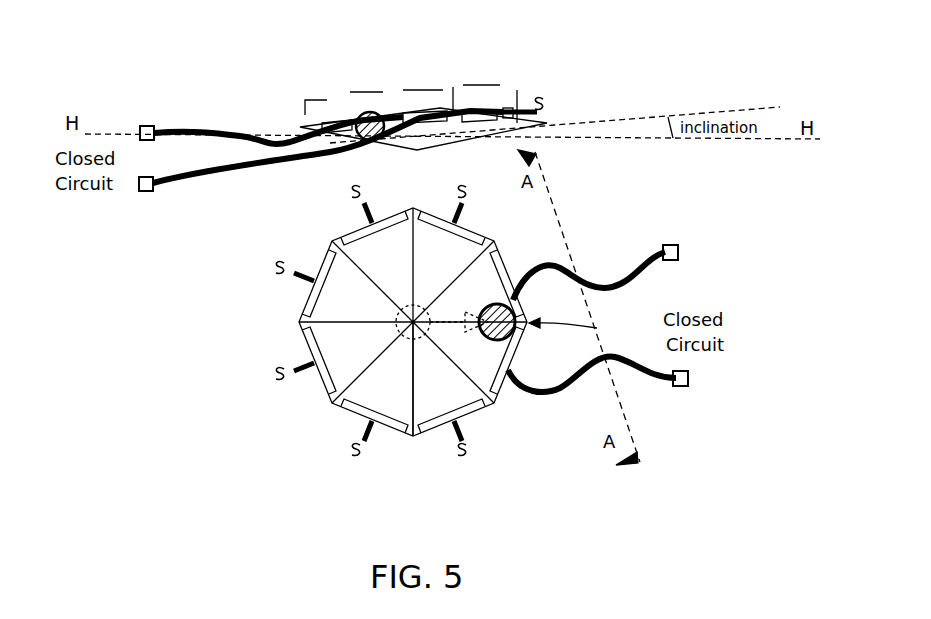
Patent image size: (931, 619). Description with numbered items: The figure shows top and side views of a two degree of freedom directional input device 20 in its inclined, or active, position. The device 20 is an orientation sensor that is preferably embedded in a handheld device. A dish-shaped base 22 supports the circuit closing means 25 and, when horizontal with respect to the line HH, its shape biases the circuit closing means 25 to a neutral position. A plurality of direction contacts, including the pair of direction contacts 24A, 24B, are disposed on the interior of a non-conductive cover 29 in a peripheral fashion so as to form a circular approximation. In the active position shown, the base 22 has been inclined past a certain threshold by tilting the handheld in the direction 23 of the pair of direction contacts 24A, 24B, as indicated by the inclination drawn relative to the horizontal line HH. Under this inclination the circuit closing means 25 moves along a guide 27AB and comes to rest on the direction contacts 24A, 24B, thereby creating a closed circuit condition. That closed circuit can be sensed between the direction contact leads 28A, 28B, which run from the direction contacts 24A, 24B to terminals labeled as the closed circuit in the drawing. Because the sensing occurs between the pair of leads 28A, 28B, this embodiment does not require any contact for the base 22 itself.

The two degree of freedom directional input device 20 is at (568, 22).
The base 22 is at (450, 140).
The direction 23 is at (447, 328).
The direction contact 24A is at (427, 112).
The direction contact 24B is at (355, 118).
The circuit closing means 25 is at (370, 113).
The guide 27AB is at (563, 339).
The direction contact lead 28A is at (147, 192).
The direction contact lead 28B is at (148, 125).
The non-conductive cover 29 is at (500, 84).